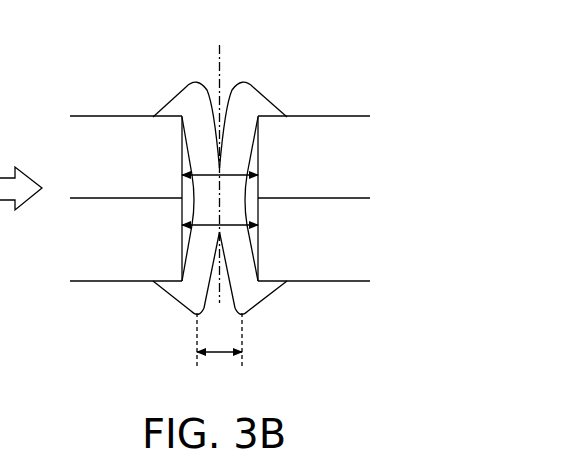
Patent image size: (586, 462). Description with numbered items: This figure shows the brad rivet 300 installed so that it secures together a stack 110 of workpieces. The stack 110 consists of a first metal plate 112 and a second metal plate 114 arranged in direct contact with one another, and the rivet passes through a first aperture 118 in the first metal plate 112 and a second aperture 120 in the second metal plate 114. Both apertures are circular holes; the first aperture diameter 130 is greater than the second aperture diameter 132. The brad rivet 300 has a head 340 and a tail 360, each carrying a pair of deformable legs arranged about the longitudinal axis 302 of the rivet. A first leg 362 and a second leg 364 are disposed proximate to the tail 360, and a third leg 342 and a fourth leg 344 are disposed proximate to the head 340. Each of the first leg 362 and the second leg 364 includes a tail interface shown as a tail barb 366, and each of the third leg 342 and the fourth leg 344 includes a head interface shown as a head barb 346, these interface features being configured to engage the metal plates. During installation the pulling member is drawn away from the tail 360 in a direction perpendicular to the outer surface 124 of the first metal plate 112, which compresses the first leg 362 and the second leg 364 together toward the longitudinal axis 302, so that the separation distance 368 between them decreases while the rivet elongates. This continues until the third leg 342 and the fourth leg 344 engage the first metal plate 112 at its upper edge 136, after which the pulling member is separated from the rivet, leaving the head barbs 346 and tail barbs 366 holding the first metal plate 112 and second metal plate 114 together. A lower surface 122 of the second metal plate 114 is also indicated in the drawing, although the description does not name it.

The stack 110 is at (390, 276).
The first metal plate 112 is at (348, 137).
The second metal plate 114 is at (347, 245).
The first aperture 118 is at (180, 168).
The second aperture 120 is at (262, 233).
The lower right surface 122 is at (262, 296).
The outer surface 124 is at (95, 115).
The first aperture diameter 130 is at (262, 172).
The second aperture diameter 132 is at (180, 227).
The upper edge 136 is at (182, 112).
The brad rivet 300 is at (220, 179).
The longitudinal axis 302 is at (218, 58).
The head 340 is at (241, 70).
The third leg 342 is at (198, 128).
The fourth leg 344 is at (244, 132).
The head barb 346 is at (262, 106).
The tail 360 is at (212, 319).
The first leg 362 is at (198, 274).
The second leg 364 is at (242, 274).
The tail barb 366 is at (176, 303).
The separation distance 368 is at (218, 356).